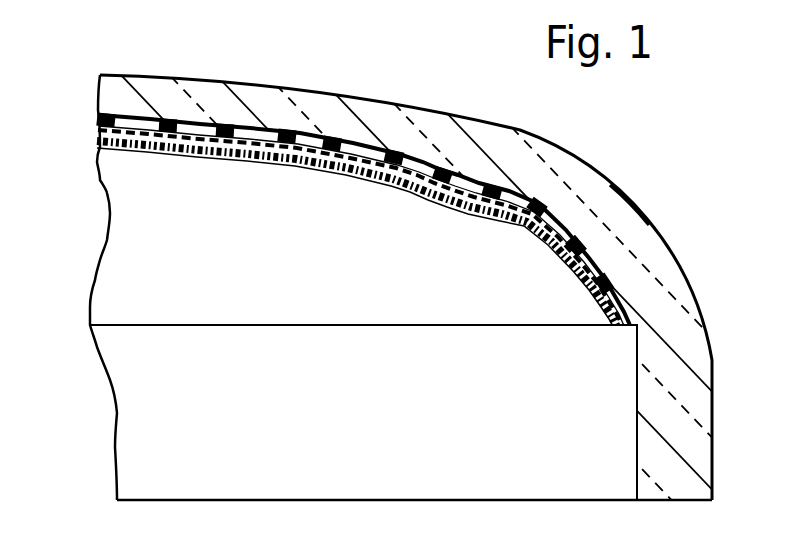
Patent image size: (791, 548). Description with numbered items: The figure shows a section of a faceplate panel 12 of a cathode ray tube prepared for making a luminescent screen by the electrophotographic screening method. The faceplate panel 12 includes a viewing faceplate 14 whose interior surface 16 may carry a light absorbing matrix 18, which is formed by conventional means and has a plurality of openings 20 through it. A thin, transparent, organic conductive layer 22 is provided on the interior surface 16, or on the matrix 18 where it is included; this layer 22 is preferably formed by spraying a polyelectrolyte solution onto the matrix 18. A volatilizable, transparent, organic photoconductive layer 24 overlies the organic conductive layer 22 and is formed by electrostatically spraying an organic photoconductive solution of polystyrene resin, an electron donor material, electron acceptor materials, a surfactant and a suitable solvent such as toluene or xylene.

The faceplate panel 12 is at (647, 208).
The viewing faceplate 14 is at (310, 92).
The interior surface 16 is at (195, 117).
The light absorbing matrix 18 is at (165, 116).
The openings 20 is at (363, 140).
The organic conductive (OC) layer 22 is at (100, 128).
The organic photoconductive (OPC) layer 24 is at (207, 150).